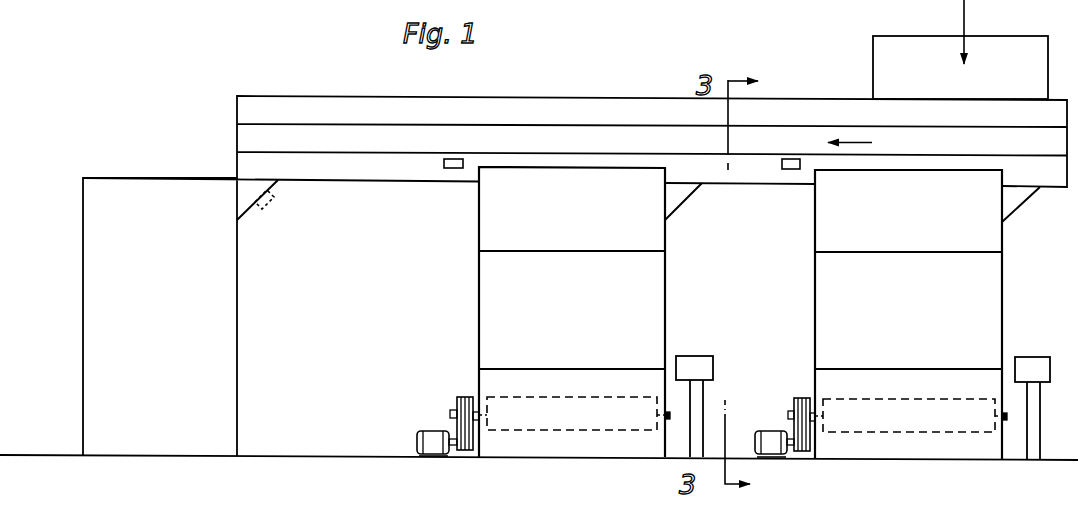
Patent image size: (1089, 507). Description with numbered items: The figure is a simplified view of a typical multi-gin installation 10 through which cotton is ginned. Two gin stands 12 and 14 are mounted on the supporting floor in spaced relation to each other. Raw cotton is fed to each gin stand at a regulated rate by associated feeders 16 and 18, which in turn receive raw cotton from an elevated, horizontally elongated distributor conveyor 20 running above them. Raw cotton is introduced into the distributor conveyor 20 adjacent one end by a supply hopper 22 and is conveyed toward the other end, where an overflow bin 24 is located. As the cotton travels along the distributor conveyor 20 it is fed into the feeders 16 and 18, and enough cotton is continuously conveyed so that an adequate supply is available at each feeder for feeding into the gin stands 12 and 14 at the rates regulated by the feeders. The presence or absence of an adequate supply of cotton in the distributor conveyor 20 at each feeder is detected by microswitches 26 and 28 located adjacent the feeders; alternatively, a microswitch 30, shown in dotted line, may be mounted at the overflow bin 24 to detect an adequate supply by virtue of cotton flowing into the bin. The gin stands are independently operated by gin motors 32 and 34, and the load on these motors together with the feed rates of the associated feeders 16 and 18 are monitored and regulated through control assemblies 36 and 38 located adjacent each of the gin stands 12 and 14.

The multi-gin installation 10 is at (171, 104).
The gin stand 12 is at (1011, 328).
The gin stand 14 is at (674, 344).
The feeder 16 is at (833, 237).
The feeder 18 is at (649, 239).
The distributor conveyor 20 is at (599, 86).
The supply hopper 22 is at (1021, 78).
The overflow bin 24 is at (97, 308).
The microswitch 26 is at (790, 169).
The microswitch 28 is at (452, 168).
The microswitch 30 is at (270, 208).
The gin motor 32 is at (762, 431).
The gin motor 34 is at (435, 442).
The control assembly 36 is at (1053, 365).
The control assembly 38 is at (719, 362).